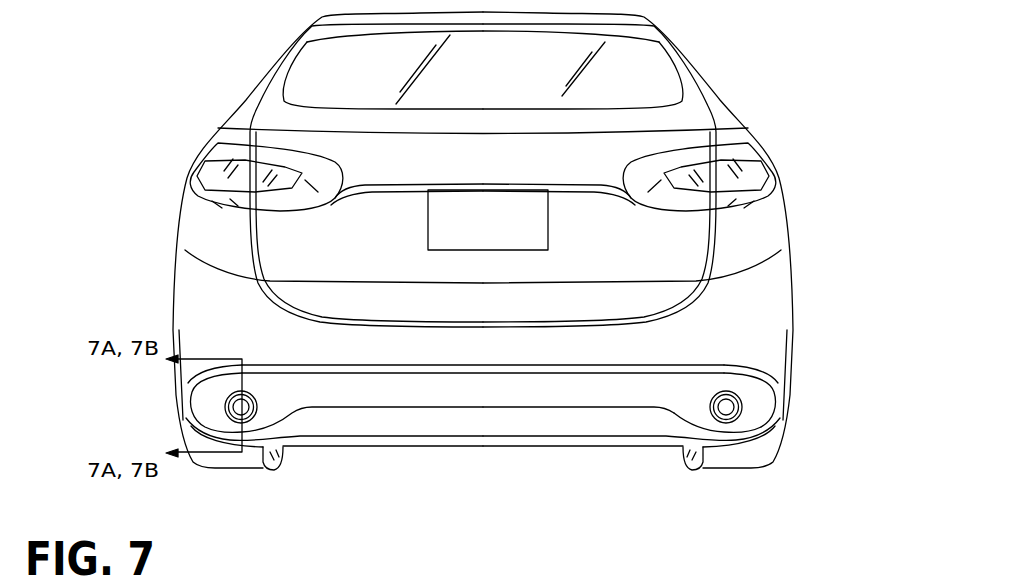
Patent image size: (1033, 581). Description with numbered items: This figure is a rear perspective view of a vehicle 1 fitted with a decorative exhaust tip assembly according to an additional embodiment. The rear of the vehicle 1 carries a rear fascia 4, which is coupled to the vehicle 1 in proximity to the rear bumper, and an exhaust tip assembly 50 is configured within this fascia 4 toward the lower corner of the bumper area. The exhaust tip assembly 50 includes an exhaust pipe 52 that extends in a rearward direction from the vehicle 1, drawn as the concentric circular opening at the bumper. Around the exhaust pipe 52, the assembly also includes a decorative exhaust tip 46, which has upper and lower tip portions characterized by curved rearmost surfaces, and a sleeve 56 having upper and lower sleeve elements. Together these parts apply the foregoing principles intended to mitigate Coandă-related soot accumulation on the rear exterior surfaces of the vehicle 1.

The vehicle 1 is at (726, 90).
The rear fascia 4 is at (768, 397).
The decorative exhaust tip 46 is at (777, 383).
The sleeve 56 is at (741, 398).
The exhaust pipe 52 is at (743, 412).
The exhaust tip assembly 50 is at (748, 430).